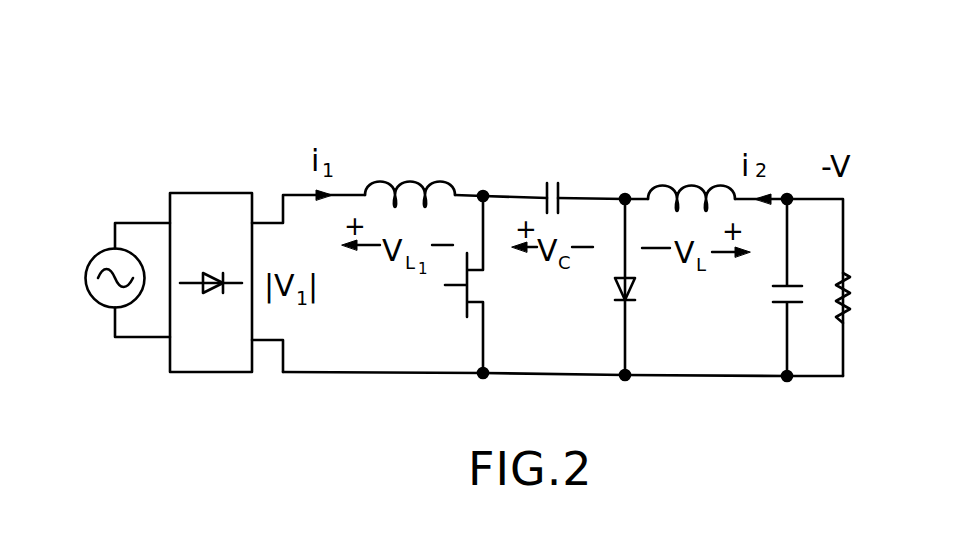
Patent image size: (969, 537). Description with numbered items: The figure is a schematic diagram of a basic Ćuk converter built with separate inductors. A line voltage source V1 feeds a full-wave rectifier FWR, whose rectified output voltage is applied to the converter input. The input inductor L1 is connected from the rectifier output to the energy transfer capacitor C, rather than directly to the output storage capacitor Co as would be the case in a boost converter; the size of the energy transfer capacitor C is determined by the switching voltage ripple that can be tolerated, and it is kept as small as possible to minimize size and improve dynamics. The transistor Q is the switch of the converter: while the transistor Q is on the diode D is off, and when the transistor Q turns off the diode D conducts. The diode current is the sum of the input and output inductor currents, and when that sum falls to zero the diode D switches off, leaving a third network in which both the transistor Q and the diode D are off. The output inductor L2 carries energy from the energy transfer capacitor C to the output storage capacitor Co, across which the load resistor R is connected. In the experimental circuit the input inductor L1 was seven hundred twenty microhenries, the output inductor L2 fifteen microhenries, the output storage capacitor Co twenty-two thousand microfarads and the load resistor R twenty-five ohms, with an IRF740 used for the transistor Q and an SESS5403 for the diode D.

The line voltage source V1 is at (109, 280).
The full-wave rectifier FWR is at (211, 265).
The input inductor L1 is at (410, 175).
The energy transfer capacitor C is at (552, 176).
The transistor Q is at (479, 284).
The diode D is at (642, 287).
The output inductor L2 is at (691, 177).
The output storage capacitor Co is at (767, 287).
The load resistor R is at (859, 298).